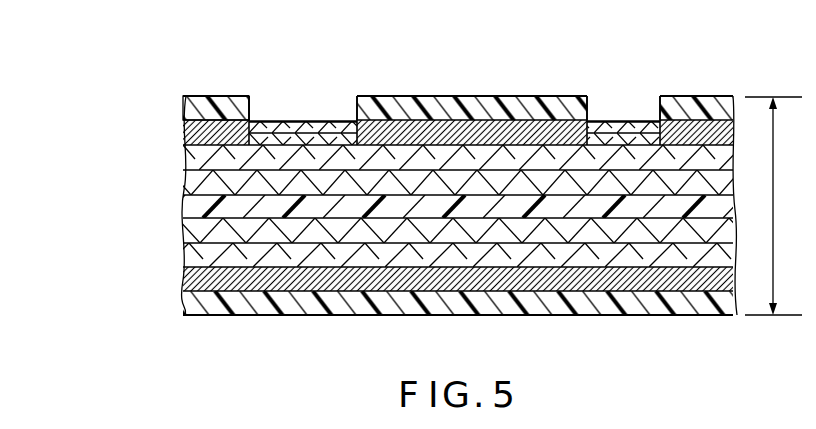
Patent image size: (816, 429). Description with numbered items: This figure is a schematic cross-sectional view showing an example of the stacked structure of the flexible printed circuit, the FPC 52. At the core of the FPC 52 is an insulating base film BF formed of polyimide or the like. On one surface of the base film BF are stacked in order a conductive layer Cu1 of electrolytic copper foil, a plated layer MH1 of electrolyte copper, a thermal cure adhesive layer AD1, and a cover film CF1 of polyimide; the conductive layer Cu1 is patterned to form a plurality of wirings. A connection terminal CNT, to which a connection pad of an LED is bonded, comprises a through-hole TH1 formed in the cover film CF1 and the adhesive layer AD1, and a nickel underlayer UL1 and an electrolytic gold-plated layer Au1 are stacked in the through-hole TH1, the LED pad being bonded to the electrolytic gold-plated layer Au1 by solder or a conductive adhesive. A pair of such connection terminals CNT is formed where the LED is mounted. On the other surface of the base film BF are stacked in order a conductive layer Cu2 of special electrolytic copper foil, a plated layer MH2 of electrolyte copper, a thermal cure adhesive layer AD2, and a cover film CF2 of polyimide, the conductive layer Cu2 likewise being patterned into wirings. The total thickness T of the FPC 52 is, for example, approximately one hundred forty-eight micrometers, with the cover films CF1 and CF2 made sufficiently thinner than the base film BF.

The FPC 52 is at (386, 92).
The cover film CF1 is at (192, 99).
The through-hole TH1 is at (252, 105).
The thermal cure adhesive layer AD1 is at (188, 130).
The electrolytic gold-plated layer Au1 is at (268, 117).
The nickel underlayer UL1 is at (338, 126).
The connection terminal CNT is at (454, 102).
The plated layer MH1 is at (190, 157).
The conductive layer Cu1 is at (192, 187).
The base film BF is at (192, 205).
The conductive layer Cu2 is at (192, 229).
The plated layer MH2 is at (192, 253).
The thermal cure adhesive layer AD2 is at (192, 280).
The cover film CF2 is at (192, 305).
The total thickness T is at (773, 206).